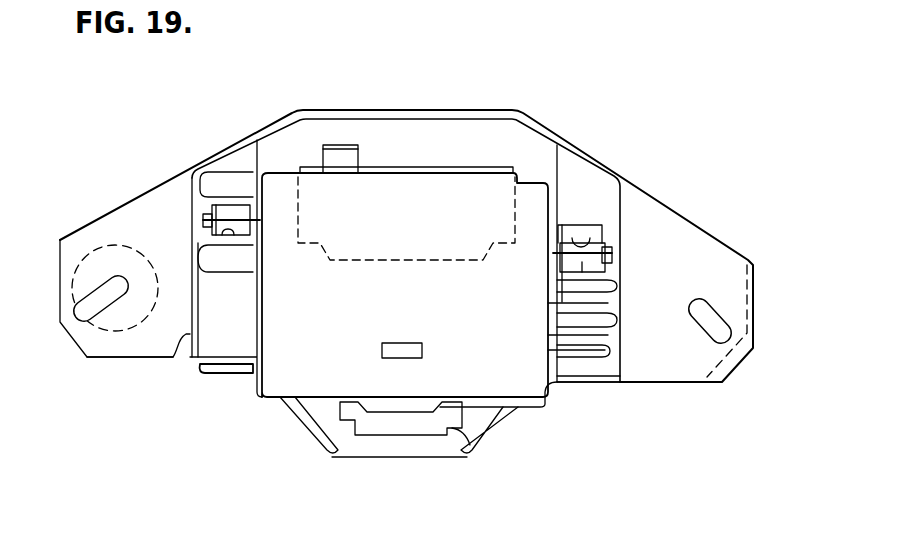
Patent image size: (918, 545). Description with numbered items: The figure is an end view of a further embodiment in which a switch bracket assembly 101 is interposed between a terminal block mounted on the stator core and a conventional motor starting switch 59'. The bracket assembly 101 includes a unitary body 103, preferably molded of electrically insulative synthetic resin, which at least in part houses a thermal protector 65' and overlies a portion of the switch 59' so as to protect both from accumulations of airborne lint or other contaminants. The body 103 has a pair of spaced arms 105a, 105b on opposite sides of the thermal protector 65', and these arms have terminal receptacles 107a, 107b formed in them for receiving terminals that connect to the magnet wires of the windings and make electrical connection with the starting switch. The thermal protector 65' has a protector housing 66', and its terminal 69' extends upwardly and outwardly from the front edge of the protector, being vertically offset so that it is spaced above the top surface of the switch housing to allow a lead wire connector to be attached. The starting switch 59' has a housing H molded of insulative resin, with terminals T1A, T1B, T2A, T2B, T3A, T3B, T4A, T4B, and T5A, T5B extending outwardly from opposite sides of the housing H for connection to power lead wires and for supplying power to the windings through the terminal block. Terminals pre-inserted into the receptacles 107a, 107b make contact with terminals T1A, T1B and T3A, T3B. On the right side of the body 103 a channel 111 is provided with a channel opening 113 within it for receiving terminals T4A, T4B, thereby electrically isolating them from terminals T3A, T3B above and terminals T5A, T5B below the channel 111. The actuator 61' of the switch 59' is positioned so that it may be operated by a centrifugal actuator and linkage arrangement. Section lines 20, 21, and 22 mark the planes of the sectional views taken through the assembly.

The switch bracket assembly 101 is at (589, 147).
The bracket body 103 is at (182, 357).
The spaced arm 105a is at (232, 206).
The spaced arm 105b is at (583, 240).
The terminal receptacle 107a is at (230, 238).
The terminal receptacle 107b is at (598, 248).
The channel 111 is at (612, 283).
The channel opening 113 is at (592, 313).
The thermal protector 65' is at (405, 212).
The thermal protector housing 66' is at (406, 130).
The terminal 69' is at (310, 126).
The motor starting switch 59' is at (295, 425).
The actuator 61' is at (489, 438).
The housing H is at (349, 346).
The terminal T1A is at (214, 205).
The terminal T1B is at (190, 184).
The terminal T2A is at (202, 220).
The terminal T2B is at (203, 268).
The terminal T3A is at (604, 258).
The terminal T3B is at (626, 242).
The terminal T4A is at (613, 286).
The terminal T4B is at (616, 298).
The terminal T5A is at (608, 378).
The terminal T5B is at (625, 409).
The section line 20- 20 is at (583, 240).
The section line 21- 21 is at (372, 72).
The section line 22- 22 is at (177, 97).